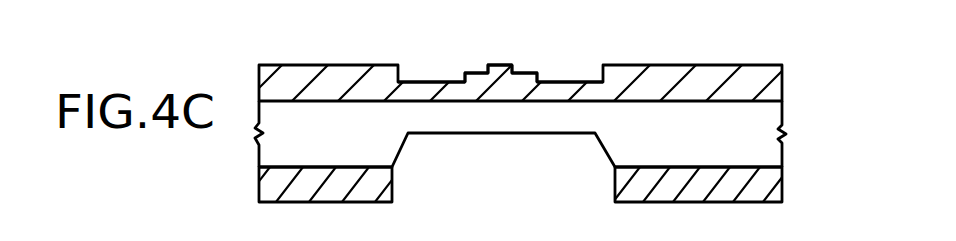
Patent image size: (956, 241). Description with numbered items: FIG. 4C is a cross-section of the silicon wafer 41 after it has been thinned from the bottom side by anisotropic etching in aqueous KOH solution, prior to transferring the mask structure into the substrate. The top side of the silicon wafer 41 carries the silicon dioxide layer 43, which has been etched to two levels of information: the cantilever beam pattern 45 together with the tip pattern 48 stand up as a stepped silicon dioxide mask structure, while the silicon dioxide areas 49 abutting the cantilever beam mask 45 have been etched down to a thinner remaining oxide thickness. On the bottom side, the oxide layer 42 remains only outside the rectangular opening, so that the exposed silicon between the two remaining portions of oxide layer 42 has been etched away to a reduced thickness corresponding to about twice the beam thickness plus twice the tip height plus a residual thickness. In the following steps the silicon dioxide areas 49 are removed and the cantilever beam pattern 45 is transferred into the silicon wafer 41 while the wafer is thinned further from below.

The silicon wafer 41 is at (772, 118).
The bottom oxide layer 42 is at (773, 193).
The top oxide layer 43 is at (773, 92).
The cantilever beam pattern 45 is at (522, 73).
The tip pattern 48 is at (495, 63).
The silicon dioxide areas abutting the cantilever beam mask 49 is at (423, 90).